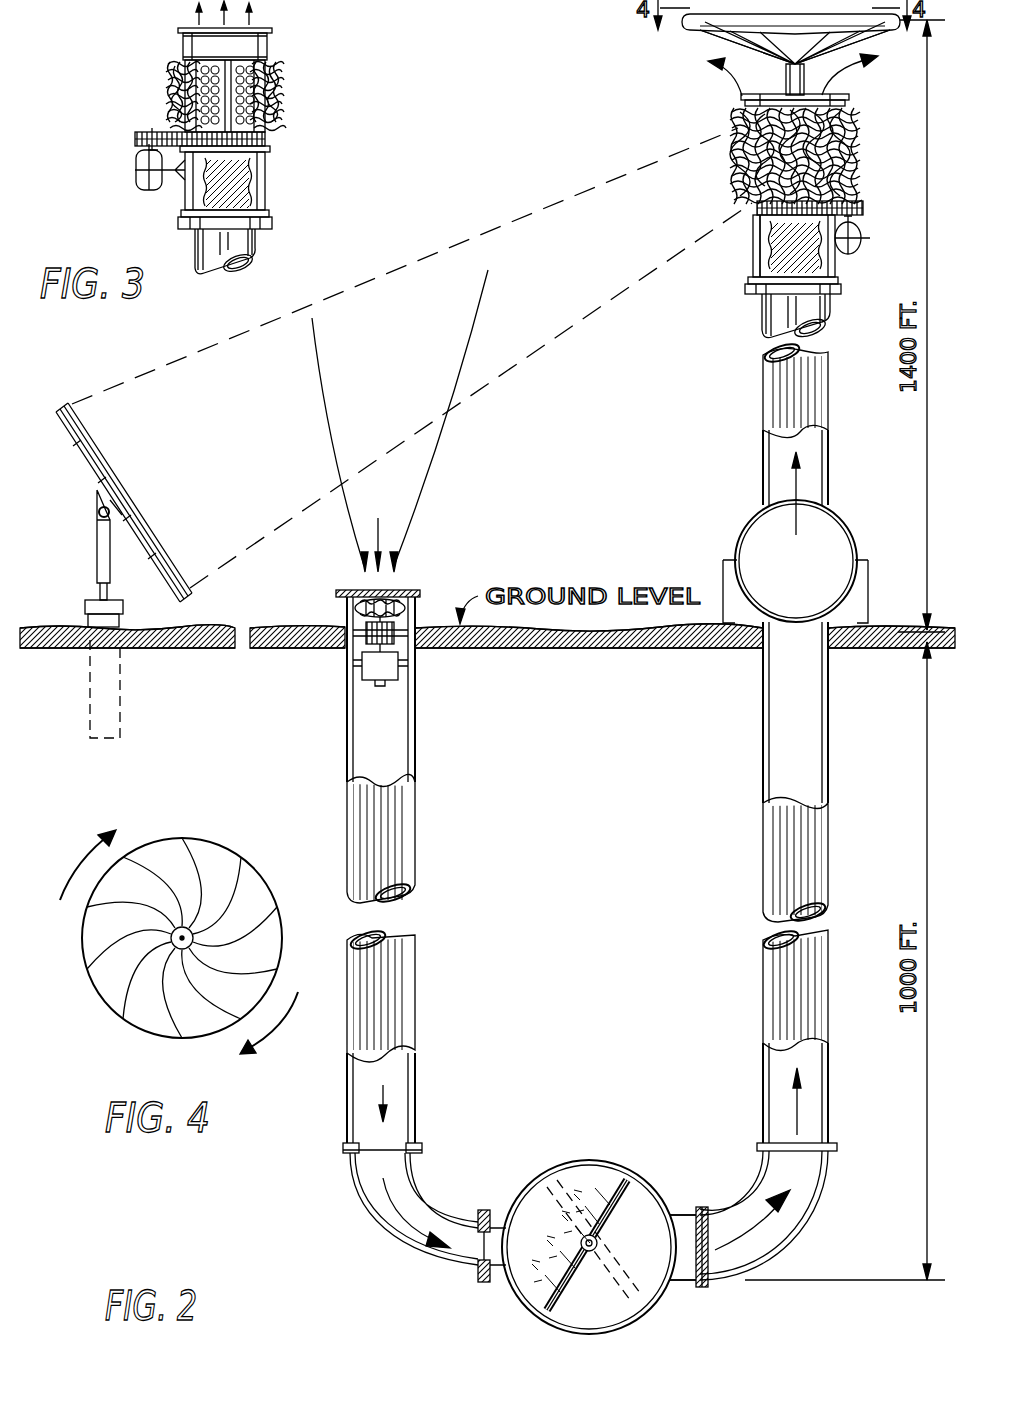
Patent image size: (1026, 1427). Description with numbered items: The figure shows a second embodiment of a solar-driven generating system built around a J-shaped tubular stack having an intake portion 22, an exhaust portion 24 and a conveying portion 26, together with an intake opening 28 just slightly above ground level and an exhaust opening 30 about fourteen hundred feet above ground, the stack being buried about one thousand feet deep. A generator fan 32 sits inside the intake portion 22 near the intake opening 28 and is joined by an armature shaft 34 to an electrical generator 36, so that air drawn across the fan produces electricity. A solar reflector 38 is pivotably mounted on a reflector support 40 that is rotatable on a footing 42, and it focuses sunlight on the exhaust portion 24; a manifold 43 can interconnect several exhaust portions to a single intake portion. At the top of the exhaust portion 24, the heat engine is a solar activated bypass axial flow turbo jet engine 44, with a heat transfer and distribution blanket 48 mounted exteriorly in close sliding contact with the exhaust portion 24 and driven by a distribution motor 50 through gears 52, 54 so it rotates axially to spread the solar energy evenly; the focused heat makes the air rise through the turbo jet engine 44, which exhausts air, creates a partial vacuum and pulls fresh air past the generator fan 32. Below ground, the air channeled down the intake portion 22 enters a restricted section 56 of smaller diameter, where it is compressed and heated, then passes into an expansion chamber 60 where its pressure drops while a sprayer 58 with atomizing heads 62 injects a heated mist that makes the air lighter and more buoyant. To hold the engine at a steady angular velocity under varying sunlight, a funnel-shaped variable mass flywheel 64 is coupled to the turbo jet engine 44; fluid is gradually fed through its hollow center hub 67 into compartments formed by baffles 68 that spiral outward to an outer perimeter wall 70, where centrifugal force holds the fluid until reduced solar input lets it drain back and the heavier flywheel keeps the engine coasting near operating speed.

In FIG. 2, the intake portion 22 is at (416, 774).
In FIG. 2, the exhaust portion 24 is at (822, 470).
In FIG. 2, the conveying portion 26 is at (790, 1240).
In FIG. 2, the intake opening 28 is at (398, 590).
In FIG. 2, the exhaust opening 30 is at (742, 90).
In FIG. 2, the generator fan 32 is at (403, 608).
In FIG. 2, the armature shaft 34 is at (398, 646).
In FIG. 2, the electrical generator 36 is at (364, 676).
In FIG. 2, the solar reflector 38 is at (100, 456).
In FIG. 2, the reflector support 40 is at (96, 570).
In FIG. 2, the footing 42 is at (110, 720).
In FIG. 2, the manifold 43 is at (820, 510).
In FIG. 3, the solar activated bypass axial flow turbo jet engine 44 is at (248, 198).
In FIG. 2, the solar activated bypass axial flow turbo jet engine 44 is at (770, 262).
In FIG. 2, the heat transfer and distribution blanket 48 is at (838, 135).
In FIG. 2, the distribution motor 50 is at (858, 252).
In FIG. 2, the gear 52 is at (865, 212).
In FIG. 2, the gear 54 is at (760, 222).
In FIG. 2, the restricted section 56 is at (422, 1192).
In FIG. 2, the sprayer 58 is at (622, 1196).
In FIG. 2, the expansion chamber 60 is at (655, 1210).
In FIG. 2, the atomizing heads 62 is at (600, 1195).
In FIG. 4, the variable mass flywheel 64 is at (232, 838).
In FIG. 2, the variable mass flywheel 64 is at (810, 20).
In FIG. 4, the center hub 67 is at (225, 945).
In FIG. 4, the baffles 68 is at (175, 836).
In FIG. 4, the outer perimeter wall 70 is at (150, 1038).
In FIG. 2, the outer perimeter wall 70 is at (712, 18).